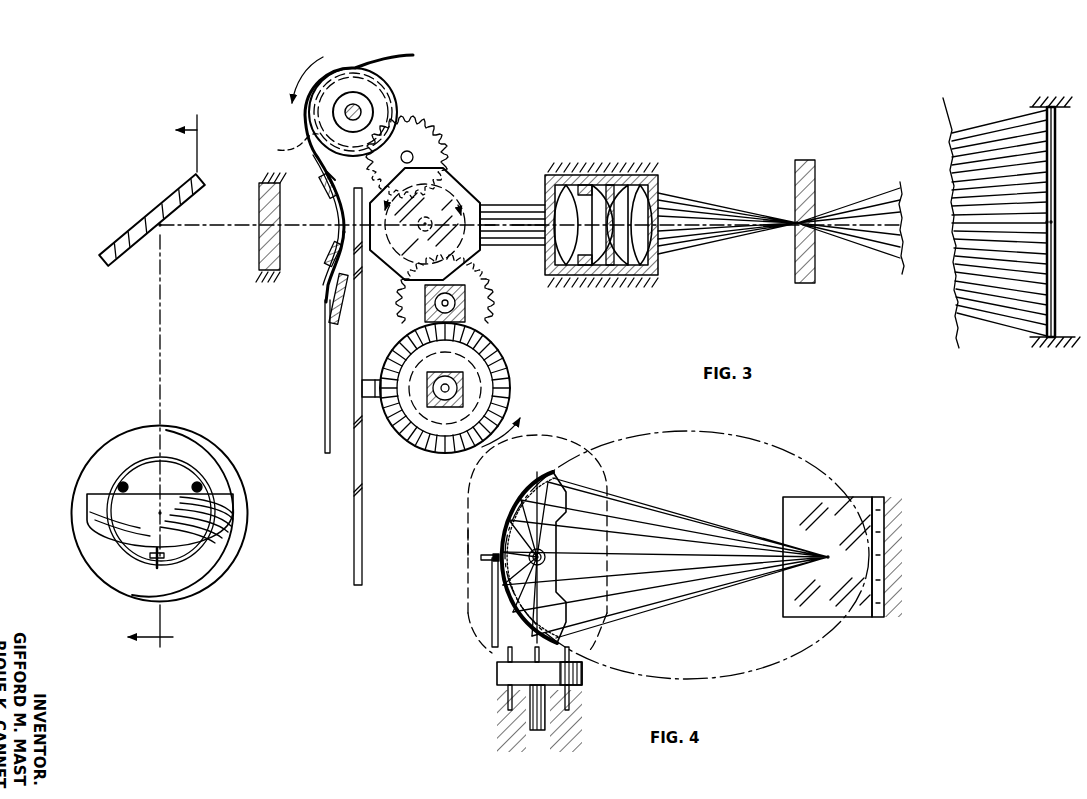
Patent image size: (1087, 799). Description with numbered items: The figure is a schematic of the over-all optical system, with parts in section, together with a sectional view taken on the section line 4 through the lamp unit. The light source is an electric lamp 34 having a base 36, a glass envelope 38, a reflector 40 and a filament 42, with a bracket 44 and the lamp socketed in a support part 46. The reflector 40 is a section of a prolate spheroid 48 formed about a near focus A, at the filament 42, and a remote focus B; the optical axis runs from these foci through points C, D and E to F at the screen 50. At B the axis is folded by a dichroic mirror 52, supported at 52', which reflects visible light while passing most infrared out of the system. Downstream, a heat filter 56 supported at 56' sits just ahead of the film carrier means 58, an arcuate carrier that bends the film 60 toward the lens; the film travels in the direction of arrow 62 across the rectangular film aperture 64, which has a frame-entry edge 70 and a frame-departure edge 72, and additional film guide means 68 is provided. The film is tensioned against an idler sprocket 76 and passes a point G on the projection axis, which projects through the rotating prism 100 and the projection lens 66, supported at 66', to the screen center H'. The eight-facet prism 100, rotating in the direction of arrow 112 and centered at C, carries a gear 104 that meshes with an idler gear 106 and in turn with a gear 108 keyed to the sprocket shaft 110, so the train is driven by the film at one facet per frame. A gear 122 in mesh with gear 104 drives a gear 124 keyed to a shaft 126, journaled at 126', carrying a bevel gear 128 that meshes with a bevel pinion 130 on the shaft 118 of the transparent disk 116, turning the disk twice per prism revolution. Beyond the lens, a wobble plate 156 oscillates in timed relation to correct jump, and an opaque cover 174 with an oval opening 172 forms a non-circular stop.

In FIG. 3, the section line 4 is at (169, 386).
In FIG. 3, the electric lamp 34 is at (98, 547).
In FIG. 4, the electric lamp 34 is at (466, 617).
In FIG. 4, the base 36 is at (497, 676).
In FIG. 3, the glass envelope 38 is at (220, 576).
In FIG. 4, the glass envelope 38 is at (466, 550).
In FIG. 3, the reflector 40 is at (240, 500).
In FIG. 4, the reflector 40 is at (534, 478).
In FIG. 4, the filament 42 is at (545, 560).
In FIG. 3, the bracket 44 is at (152, 560).
In FIG. 4, the bracket 44 is at (493, 630).
In FIG. 4, the support part 46 is at (508, 725).
In FIG. 4, the prolate spheroid 48 is at (750, 440).
In FIG. 3, the screen 50 is at (1054, 132).
In FIG. 3, the mirror 52 is at (144, 220).
In FIG. 4, the mirror 52 is at (831, 538).
In FIG. 4, the mirror support 52' is at (900, 557).
In FIG. 3, the heat filter 56 is at (258, 213).
In FIG. 3, the heat filter support 56' is at (255, 289).
In FIG. 3, the film carrier means 58 is at (330, 176).
In FIG. 3, the film 60 is at (325, 395).
In FIG. 3, the arrow 62 is at (297, 80).
In FIG. 3, the film aperture 64 is at (336, 212).
In FIG. 3, the projection lens 66 is at (724, 211).
In FIG. 3, the projection lens support 66' is at (593, 147).
In FIG. 3, the film guide means 68 is at (337, 326).
In FIG. 3, the frame-entry edge 70 is at (326, 194).
In FIG. 3, the frame-departure edge 72 is at (330, 250).
In FIG. 3, the idler sprocket 76 is at (399, 93).
In FIG. 3, the rotating prism 100 is at (470, 260).
In FIG. 3, the prism gear 104 is at (468, 185).
In FIG. 3, the idler gear 106 is at (446, 142).
In FIG. 3, the gear 108 is at (290, 136).
In FIG. 3, the shaft 110 is at (357, 113).
In FIG. 3, the arrow 112 is at (390, 208).
In FIG. 3, the disk 116 is at (362, 518).
In FIG. 3, the disk shaft 118 is at (370, 400).
In FIG. 3, the gear 122 is at (488, 290).
In FIG. 3, the gear 124 is at (505, 354).
In FIG. 3, the shaft 126 is at (490, 399).
In FIG. 3, the journaled support 126' is at (501, 386).
In FIG. 3, the bevel gear 128 is at (440, 452).
In FIG. 3, the bevel pinion 130 is at (395, 344).
In FIG. 3, the wobble plate 156 is at (805, 285).
In FIG. 3, the oval opening 172 is at (792, 222).
In FIG. 3, the opaque cover 174 is at (794, 170).
In FIG. 3, the near focus A is at (160, 524).
In FIG. 4, the near focus A is at (536, 548).
In FIG. 3, the remote focus B is at (165, 237).
In FIG. 4, the remote focus B is at (836, 561).
In FIG. 3, the axis point C is at (423, 236).
In FIG. 3, the axis point D is at (513, 225).
In FIG. 3, the axis point E is at (792, 230).
In FIG. 3, the axis point F is at (1055, 222).
In FIG. 3, the point G is at (336, 234).
In FIG. 3, the screen center H' is at (1029, 236).